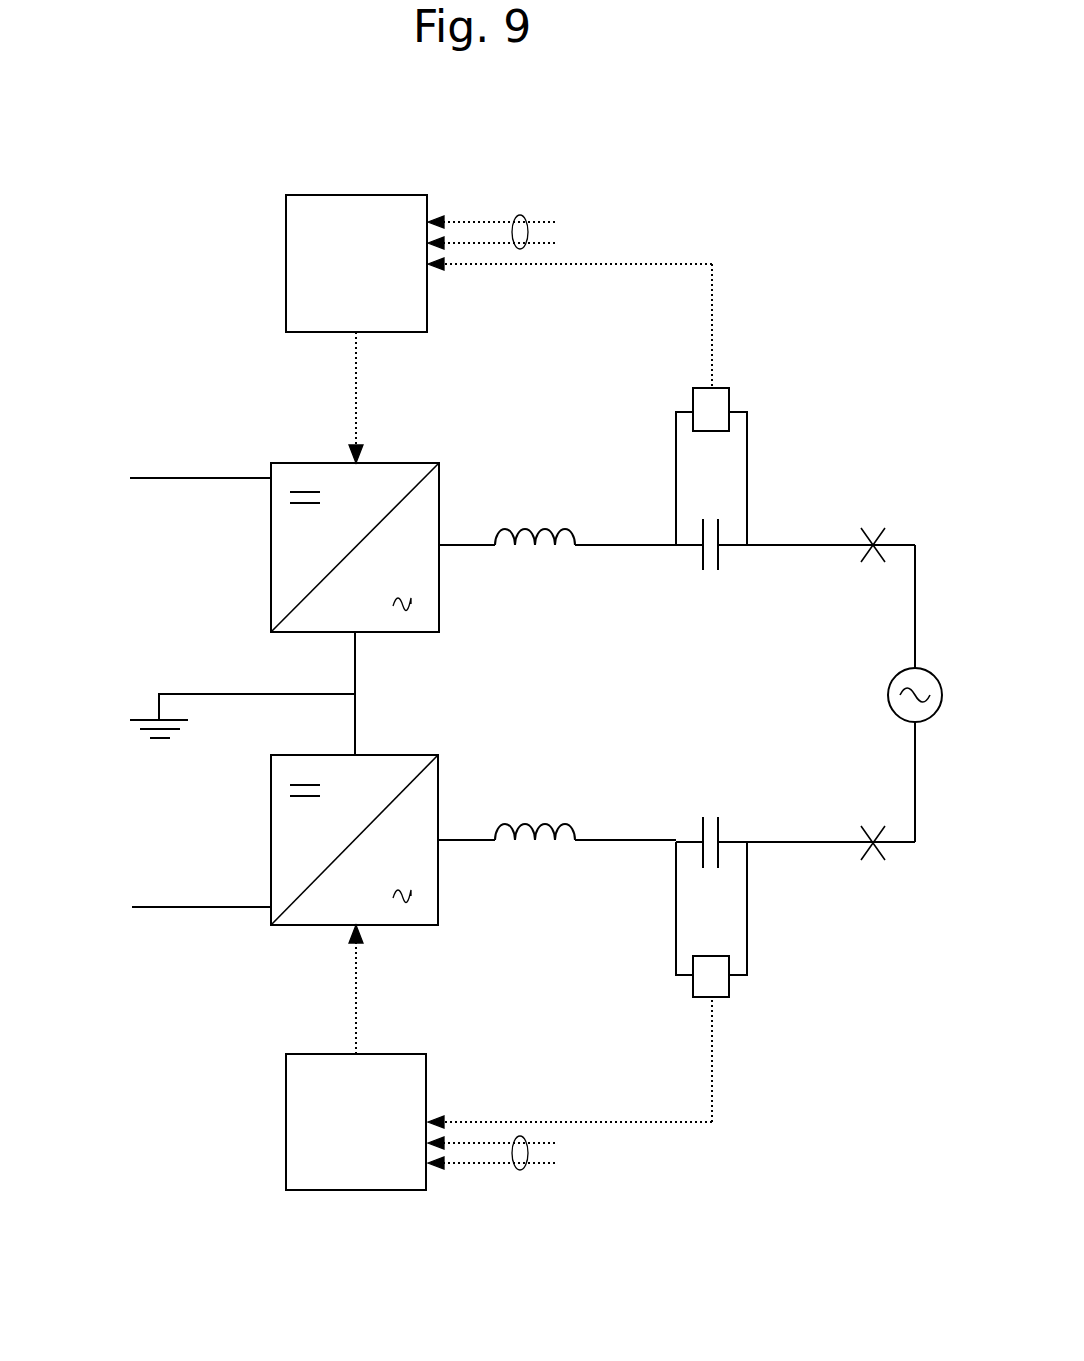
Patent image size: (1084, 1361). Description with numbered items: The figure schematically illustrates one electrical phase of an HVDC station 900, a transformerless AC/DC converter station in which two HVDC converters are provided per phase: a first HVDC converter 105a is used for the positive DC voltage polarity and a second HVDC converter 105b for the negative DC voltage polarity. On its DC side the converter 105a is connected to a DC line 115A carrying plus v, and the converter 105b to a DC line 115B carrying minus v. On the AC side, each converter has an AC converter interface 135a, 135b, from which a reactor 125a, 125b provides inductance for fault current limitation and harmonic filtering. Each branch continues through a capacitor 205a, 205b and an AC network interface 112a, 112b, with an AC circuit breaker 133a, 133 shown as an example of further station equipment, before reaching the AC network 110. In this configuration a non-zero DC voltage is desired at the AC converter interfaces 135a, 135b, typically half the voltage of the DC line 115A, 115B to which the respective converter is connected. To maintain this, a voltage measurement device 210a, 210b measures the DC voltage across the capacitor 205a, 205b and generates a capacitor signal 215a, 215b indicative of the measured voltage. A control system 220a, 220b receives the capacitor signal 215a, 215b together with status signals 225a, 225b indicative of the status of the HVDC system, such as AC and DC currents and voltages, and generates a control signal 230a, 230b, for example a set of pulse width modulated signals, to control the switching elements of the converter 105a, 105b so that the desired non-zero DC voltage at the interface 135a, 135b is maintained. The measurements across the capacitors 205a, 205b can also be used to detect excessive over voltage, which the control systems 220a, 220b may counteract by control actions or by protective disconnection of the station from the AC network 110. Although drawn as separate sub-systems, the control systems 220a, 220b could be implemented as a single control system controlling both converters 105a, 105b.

The HVDC converter 105a is at (271, 573).
The HVDC converter 105b is at (271, 858).
The AC network 110 is at (888, 706).
The AC network interface 112a is at (808, 538).
The AC network interface 112b is at (803, 848).
The DC line 115A is at (208, 478).
The DC line 115B is at (215, 910).
The reactor 125a is at (528, 553).
The reactor 125b is at (528, 848).
The AC circuit breaker 133 is at (872, 860).
The AC circuit breaker 133a is at (880, 528).
The AC converter interface 135a is at (443, 539).
The AC converter interface 135b is at (443, 834).
The capacitor 205a is at (700, 553).
The capacitor 205b is at (700, 832).
The voltage measurement device 210a is at (730, 400).
The voltage measurement device 210b is at (730, 988).
The capacitor signal 215a is at (526, 282).
The capacitor signal 215b is at (518, 1122).
The control system 220a is at (356, 263).
The control system 220b is at (356, 1122).
The status signals 225a is at (520, 214).
The status signals 225b is at (518, 1172).
The control signal 230a is at (358, 380).
The control signal 230b is at (358, 992).
The HVDC station 900 is at (490, 1320).